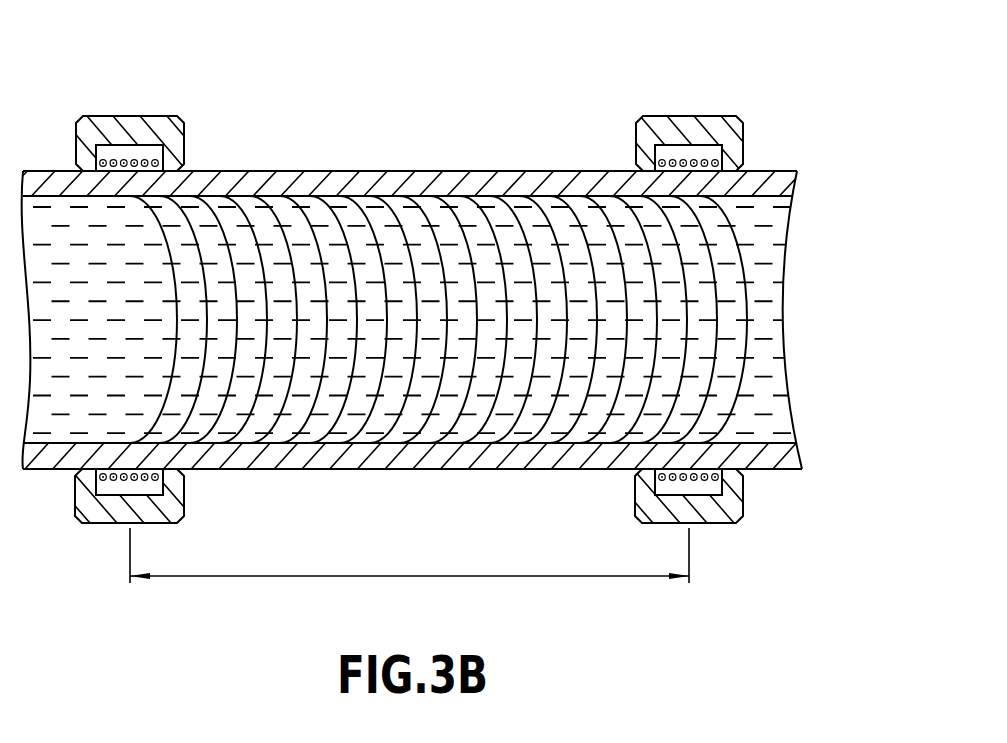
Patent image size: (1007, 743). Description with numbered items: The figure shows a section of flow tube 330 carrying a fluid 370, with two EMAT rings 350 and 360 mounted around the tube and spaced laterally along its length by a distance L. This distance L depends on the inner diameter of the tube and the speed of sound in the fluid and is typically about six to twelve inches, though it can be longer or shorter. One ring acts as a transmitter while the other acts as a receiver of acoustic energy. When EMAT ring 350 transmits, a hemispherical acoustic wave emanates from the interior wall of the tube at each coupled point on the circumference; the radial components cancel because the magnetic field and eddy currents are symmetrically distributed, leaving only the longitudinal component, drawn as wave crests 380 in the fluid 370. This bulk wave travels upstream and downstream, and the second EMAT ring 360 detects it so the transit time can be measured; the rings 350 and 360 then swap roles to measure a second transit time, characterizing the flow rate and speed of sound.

The tube 330 is at (795, 182).
The EMAT ring 350 is at (685, 102).
The second EMAT ring 360 is at (136, 102).
The fluid 370 is at (763, 390).
The wave crests 380 is at (765, 262).
The lateral distance between the two EMAT rings L is at (410, 576).